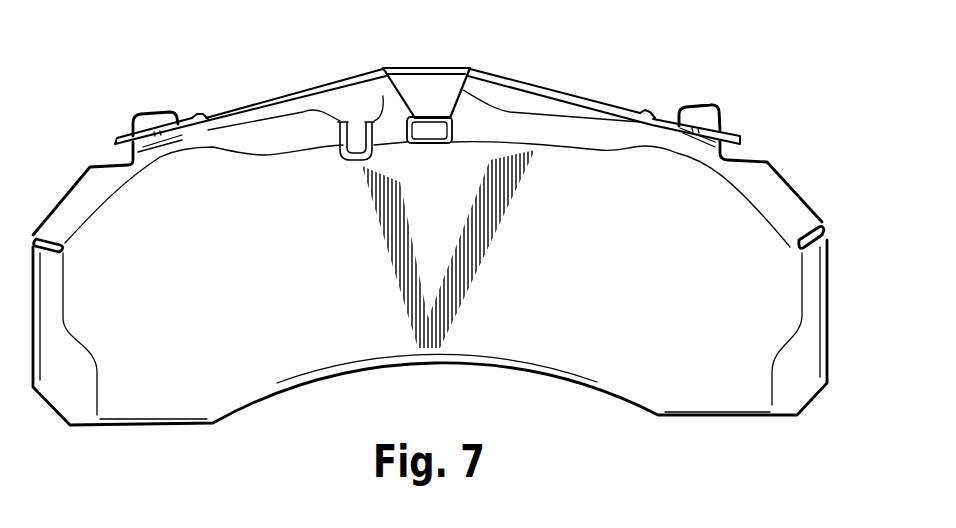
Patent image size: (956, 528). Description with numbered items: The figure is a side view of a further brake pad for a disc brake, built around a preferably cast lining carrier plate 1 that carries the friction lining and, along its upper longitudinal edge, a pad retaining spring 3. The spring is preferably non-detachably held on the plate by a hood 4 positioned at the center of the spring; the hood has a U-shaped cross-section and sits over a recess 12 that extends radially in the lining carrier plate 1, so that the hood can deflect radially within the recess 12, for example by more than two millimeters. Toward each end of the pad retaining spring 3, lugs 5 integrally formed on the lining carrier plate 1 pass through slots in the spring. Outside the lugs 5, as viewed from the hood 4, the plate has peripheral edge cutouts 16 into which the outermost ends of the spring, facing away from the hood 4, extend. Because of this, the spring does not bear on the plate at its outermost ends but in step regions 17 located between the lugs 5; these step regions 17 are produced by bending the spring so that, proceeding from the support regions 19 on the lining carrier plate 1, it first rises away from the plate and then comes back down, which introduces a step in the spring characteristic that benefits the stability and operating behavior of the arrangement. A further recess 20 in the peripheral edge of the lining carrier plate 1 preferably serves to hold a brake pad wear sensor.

The lining carrier plate 1 is at (811, 203).
The pad retaining spring 3 is at (558, 90).
The hood 4 is at (438, 82).
The lugs 5 is at (702, 108).
The recess 12 is at (430, 138).
The peripheral edge cutouts 16 is at (128, 163).
The step regions 17 is at (200, 110).
The support regions 19 is at (207, 138).
The recess 20 is at (355, 133).